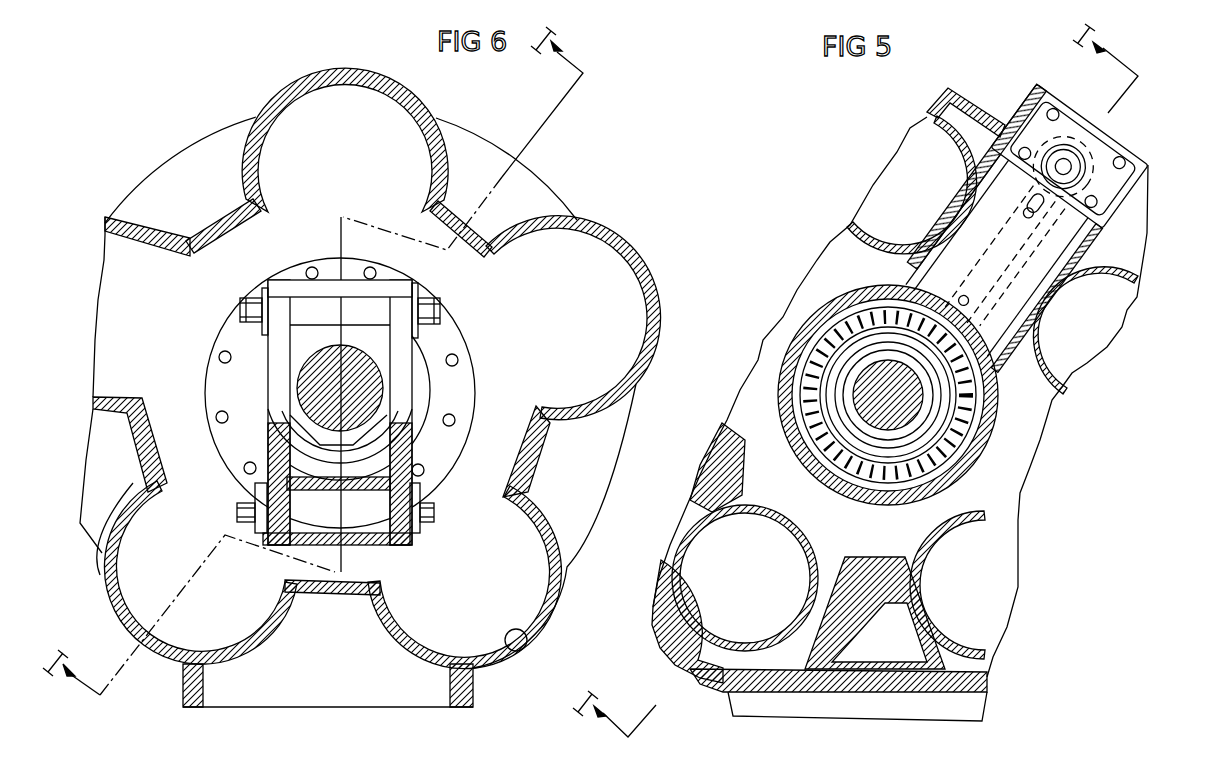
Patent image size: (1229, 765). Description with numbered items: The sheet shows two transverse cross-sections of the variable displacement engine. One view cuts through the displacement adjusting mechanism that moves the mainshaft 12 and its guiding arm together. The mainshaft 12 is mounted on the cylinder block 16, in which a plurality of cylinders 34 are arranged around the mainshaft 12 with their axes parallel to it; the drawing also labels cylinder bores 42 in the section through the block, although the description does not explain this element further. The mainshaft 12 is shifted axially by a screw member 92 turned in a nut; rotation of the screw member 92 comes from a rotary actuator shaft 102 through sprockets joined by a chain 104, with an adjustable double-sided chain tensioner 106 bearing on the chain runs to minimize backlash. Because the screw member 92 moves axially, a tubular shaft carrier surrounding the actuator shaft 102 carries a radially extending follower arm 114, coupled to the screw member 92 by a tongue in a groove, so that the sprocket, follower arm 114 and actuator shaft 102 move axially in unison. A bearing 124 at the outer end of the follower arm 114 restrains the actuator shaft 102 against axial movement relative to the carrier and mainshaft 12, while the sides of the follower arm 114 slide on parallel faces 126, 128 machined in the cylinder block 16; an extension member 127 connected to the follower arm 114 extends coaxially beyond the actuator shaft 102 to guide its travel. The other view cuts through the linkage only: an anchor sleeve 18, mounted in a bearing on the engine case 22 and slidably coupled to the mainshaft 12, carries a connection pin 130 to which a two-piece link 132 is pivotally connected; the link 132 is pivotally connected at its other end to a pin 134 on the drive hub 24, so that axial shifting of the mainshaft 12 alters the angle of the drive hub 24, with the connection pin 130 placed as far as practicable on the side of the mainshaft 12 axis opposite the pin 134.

In FIG. 6, the mainshaft 12 is at (317, 382).
In FIG. 5, the mainshaft 12 is at (870, 445).
In FIG. 5, the cylinder block 16 is at (985, 680).
In FIG. 6, the anchor sleeve 18 is at (358, 442).
In FIG. 6, the engine case 22 is at (656, 352).
In FIG. 6, the drive hub 24 is at (368, 545).
In FIG. 5, the cylinders 34 is at (932, 128).
In FIG. 6, the cylinder bore 42 is at (413, 110).
In FIG. 5, the screw member 92 is at (888, 445).
In FIG. 5, the rotary actuator shaft 102 is at (1070, 165).
In FIG. 5, the chain 104 is at (1003, 387).
In FIG. 5, the chain tensioner 106 is at (925, 288).
In FIG. 5, the follower arm 114 is at (1040, 315).
In FIG. 5, the bearing 124 is at (1047, 133).
In FIG. 5, the parallel face 126 is at (1042, 290).
In FIG. 5, the extension member 127 is at (1095, 180).
In FIG. 5, the parallel face 128 is at (973, 235).
In FIG. 6, the connection pin 130 is at (440, 308).
In FIG. 6, the two-piece link 132 is at (398, 385).
In FIG. 6, the pin 134 is at (434, 512).